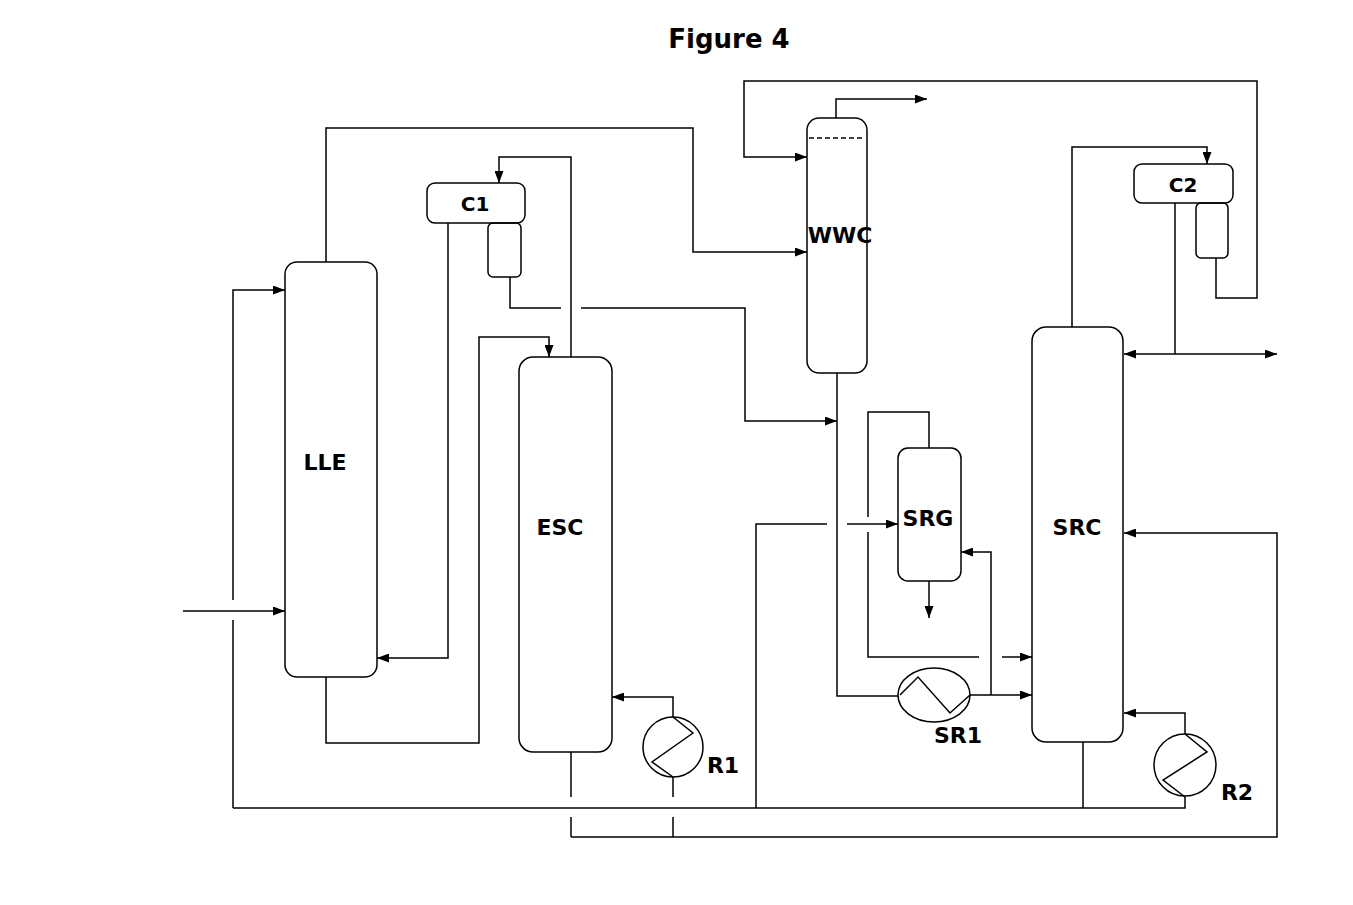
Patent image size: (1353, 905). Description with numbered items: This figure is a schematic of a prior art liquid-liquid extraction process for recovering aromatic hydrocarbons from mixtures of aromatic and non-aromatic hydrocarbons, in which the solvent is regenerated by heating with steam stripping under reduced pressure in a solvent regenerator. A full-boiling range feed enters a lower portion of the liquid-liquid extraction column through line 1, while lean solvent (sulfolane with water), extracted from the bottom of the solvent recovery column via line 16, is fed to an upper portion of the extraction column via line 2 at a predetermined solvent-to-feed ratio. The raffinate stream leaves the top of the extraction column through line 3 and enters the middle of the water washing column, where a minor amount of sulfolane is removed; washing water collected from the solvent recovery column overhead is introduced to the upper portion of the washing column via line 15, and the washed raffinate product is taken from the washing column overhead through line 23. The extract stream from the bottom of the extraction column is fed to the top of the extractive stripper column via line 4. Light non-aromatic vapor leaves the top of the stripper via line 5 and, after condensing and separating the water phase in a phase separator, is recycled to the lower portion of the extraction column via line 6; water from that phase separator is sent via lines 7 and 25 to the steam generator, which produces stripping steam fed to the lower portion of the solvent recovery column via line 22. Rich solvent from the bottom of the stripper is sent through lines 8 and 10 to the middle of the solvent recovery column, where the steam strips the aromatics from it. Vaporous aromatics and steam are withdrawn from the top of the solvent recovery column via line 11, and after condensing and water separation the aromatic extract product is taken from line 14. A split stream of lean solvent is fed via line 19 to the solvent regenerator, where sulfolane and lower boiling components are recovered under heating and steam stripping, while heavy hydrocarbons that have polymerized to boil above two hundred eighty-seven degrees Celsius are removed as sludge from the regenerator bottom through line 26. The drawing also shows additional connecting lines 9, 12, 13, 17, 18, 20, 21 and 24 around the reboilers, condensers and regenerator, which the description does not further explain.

The feed line 1 is at (234, 599).
The lean solvent feed line 2 is at (249, 549).
The raffinate line 3 is at (566, 184).
The extract line 4 is at (437, 540).
The ESC overhead vapor line 5 is at (542, 257).
The non-aromatic recycle line 6 is at (412, 440).
The phase separator water line 7 is at (673, 349).
The rich solvent line 8 is at (581, 794).
The reboiler R1 return stream 9 is at (642, 755).
The rich solvent feed line to SRC 10 is at (939, 685).
The SRC overhead line 11 is at (1139, 237).
The condensed SRC overhead stream 12 is at (1160, 278).
The reflux stream to SRC 13 is at (1149, 367).
The extract product line 14 is at (1226, 367).
The washing water line 15 is at (1000, 189).
The lean solvent line 16 is at (1095, 775).
The reboiler R2 return stream 17 is at (1154, 712).
The solvent recycle line 18 is at (709, 796).
The lean solvent split stream line 19 is at (827, 666).
The SRG side stream to SRC 20 is at (988, 623).
The SRG overhead stream 21 is at (950, 523).
The stripping steam line 22 is at (1001, 708).
The washed raffinate product line 23 is at (894, 110).
The WWC bottoms stream 24 is at (824, 397).
The water line to steam generator 25 is at (855, 558).
The sludge removal line 26 is at (932, 611).